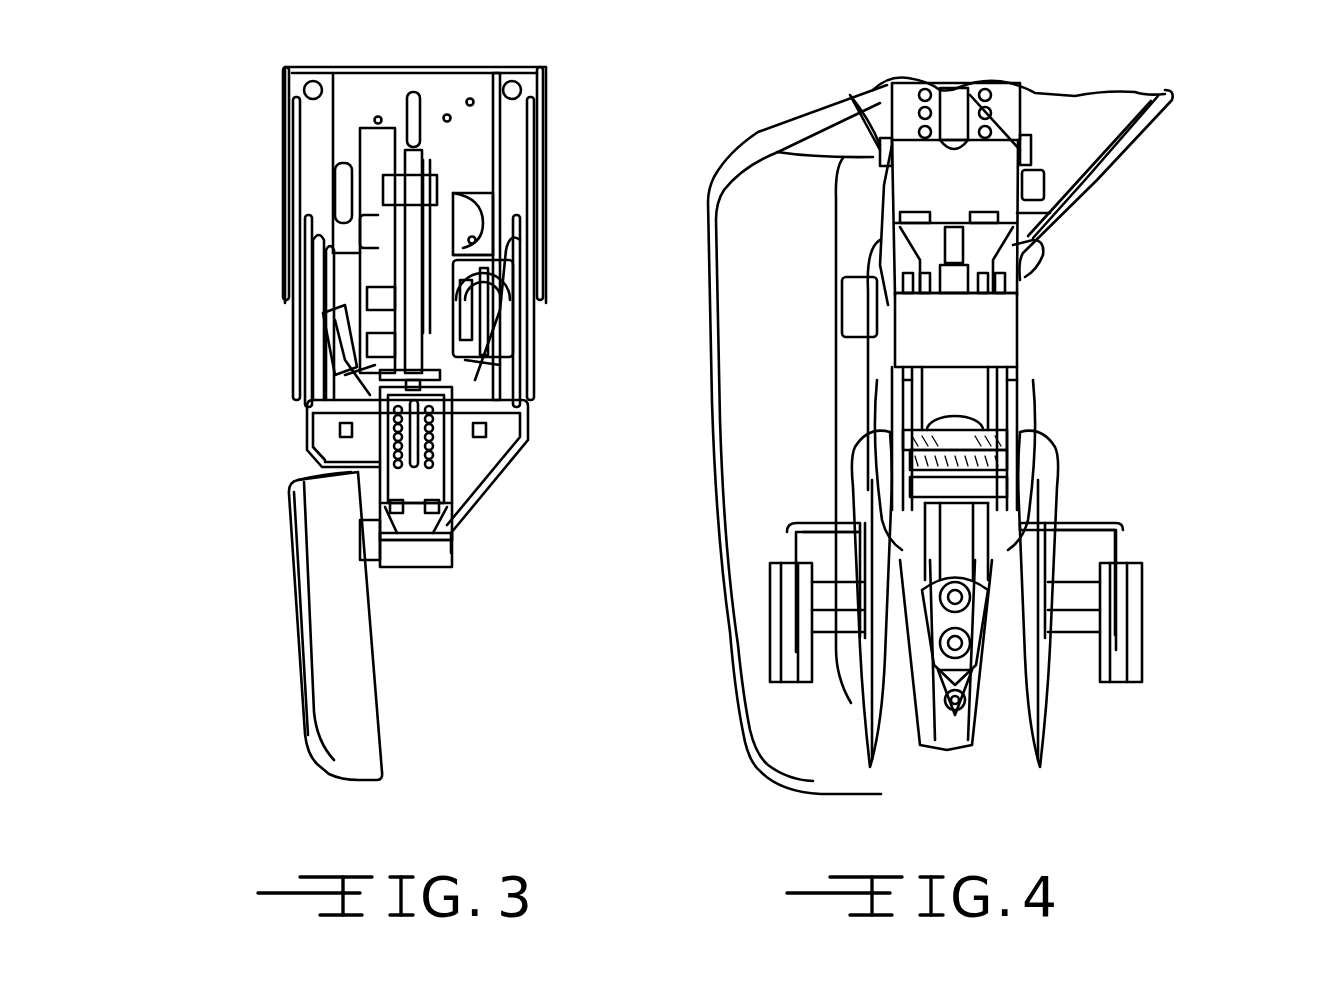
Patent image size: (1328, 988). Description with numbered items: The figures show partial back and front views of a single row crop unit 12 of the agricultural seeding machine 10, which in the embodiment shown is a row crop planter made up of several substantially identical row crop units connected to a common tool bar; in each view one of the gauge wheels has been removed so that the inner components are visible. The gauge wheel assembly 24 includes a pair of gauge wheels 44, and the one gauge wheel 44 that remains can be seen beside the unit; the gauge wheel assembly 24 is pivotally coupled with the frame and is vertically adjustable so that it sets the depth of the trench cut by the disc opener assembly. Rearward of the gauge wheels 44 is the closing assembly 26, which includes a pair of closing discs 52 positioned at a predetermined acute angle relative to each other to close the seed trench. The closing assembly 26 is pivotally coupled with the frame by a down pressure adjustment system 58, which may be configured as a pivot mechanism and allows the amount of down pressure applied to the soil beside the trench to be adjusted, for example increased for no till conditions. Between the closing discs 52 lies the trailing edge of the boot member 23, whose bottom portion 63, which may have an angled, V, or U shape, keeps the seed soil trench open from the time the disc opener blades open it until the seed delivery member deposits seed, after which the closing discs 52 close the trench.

In FIG. 3, the agricultural seeding machine 10 is at (577, 190).
In FIG. 4, the agricultural seeding machine 10 is at (1155, 177).
In FIG. 3, the row crop unit 12 is at (447, 727).
In FIG. 4, the row crop unit 12 is at (1028, 782).
In FIG. 4, the boot member 23 is at (952, 750).
In FIG. 3, the gauge wheel assembly 24 is at (298, 675).
In FIG. 4, the gauge wheel assembly 24 is at (728, 436).
In FIG. 4, the closing assembly 26 is at (857, 717).
In FIG. 3, the gauge wheel 44 is at (318, 598).
In FIG. 4, the gauge wheel 44 is at (738, 328).
In FIG. 4, the closing disc 52 is at (870, 548).
In FIG. 4, the down pressure adjustment system 58 is at (890, 508).
In FIG. 4, the bottom portion 63 is at (958, 750).